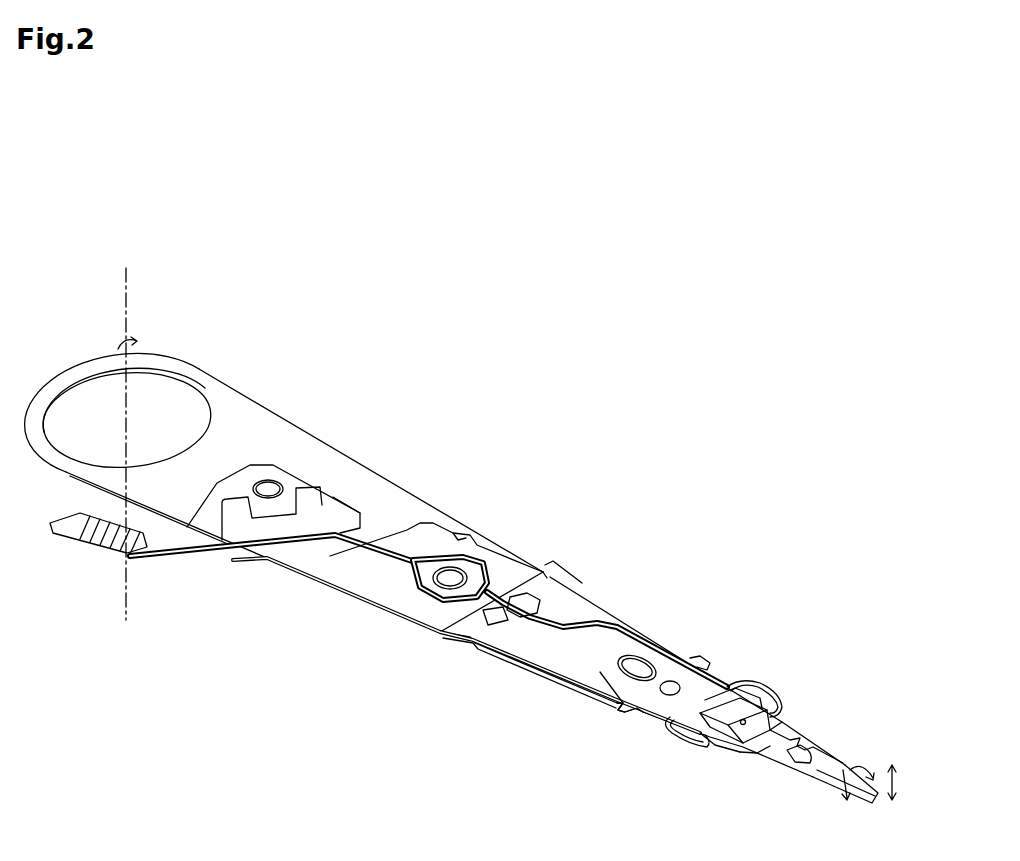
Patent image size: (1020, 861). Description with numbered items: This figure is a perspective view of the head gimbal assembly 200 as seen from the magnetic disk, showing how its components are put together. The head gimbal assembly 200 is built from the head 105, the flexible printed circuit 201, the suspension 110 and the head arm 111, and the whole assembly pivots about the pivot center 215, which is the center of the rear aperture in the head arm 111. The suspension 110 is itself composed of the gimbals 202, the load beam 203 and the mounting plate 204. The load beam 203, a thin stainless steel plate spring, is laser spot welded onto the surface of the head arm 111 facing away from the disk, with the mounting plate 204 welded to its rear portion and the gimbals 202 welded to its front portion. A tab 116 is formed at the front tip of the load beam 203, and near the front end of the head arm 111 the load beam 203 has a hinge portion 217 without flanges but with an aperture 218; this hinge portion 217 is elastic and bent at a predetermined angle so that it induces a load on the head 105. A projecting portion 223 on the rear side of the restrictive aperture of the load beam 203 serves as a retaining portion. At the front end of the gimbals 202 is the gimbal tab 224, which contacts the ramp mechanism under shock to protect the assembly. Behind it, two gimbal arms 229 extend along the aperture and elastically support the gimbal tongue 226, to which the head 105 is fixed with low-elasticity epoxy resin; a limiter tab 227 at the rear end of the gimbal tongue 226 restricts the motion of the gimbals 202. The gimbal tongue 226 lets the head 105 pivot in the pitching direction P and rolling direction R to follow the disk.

The suspension 110 is at (418, 687).
The head arm 111 is at (282, 428).
The tab 116 is at (845, 773).
The head 105 is at (777, 695).
The head gimbal assembly 200 is at (757, 432).
The FPC (flexible printed circuit) 201 is at (174, 570).
The gimbals 202 is at (620, 713).
The load beam 203 is at (513, 650).
The mounting plate 204 is at (510, 575).
The pivot center 215 is at (128, 308).
The hinge portion 217 is at (580, 587).
The aperture 218 is at (538, 610).
The projecting portion 223 is at (727, 708).
The gimbal tab 224 is at (797, 733).
The gimbal tongue 226 is at (757, 753).
The limiter tab 227 is at (710, 743).
The gimbal arms 229 is at (757, 683).